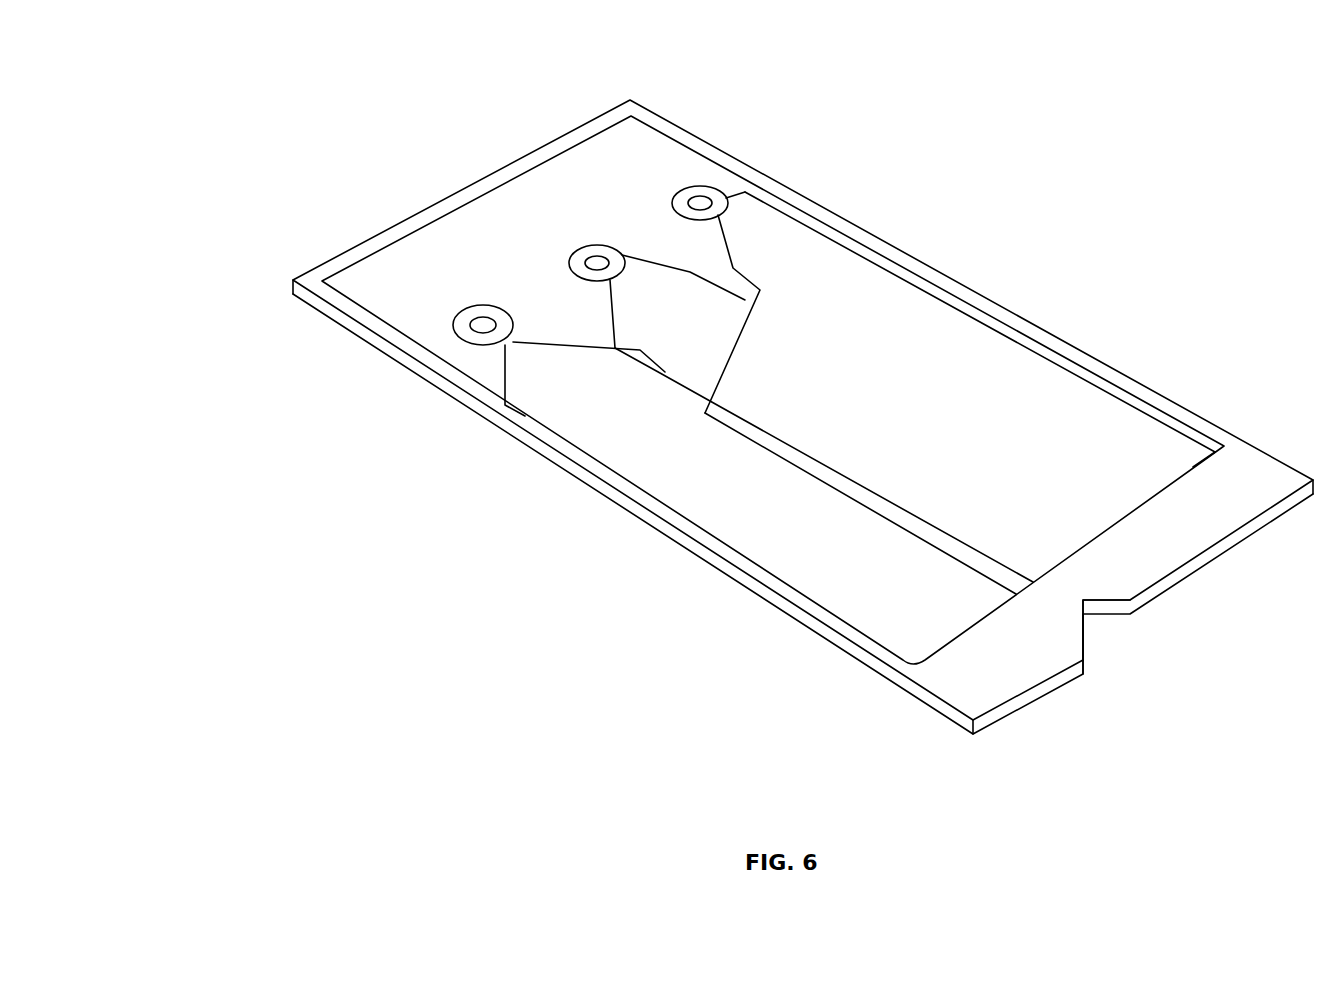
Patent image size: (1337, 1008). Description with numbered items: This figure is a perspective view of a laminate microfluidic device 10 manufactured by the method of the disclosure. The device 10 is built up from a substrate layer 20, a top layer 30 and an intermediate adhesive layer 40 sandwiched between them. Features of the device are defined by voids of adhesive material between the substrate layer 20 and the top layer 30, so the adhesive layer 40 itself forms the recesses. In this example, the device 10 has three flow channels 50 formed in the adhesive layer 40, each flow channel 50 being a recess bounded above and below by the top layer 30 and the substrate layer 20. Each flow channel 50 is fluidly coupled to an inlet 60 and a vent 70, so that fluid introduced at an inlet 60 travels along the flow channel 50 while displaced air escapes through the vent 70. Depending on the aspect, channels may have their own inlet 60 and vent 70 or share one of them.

The laminate microfluidic device 10 is at (275, 161).
The substrate layer 20 is at (803, 507).
The top layer 30 is at (782, 134).
The intermediate adhesive layer 40 is at (1193, 691).
The flow channel 50 is at (903, 347).
The inlet 60 is at (562, 245).
The vent 70 is at (1216, 284).